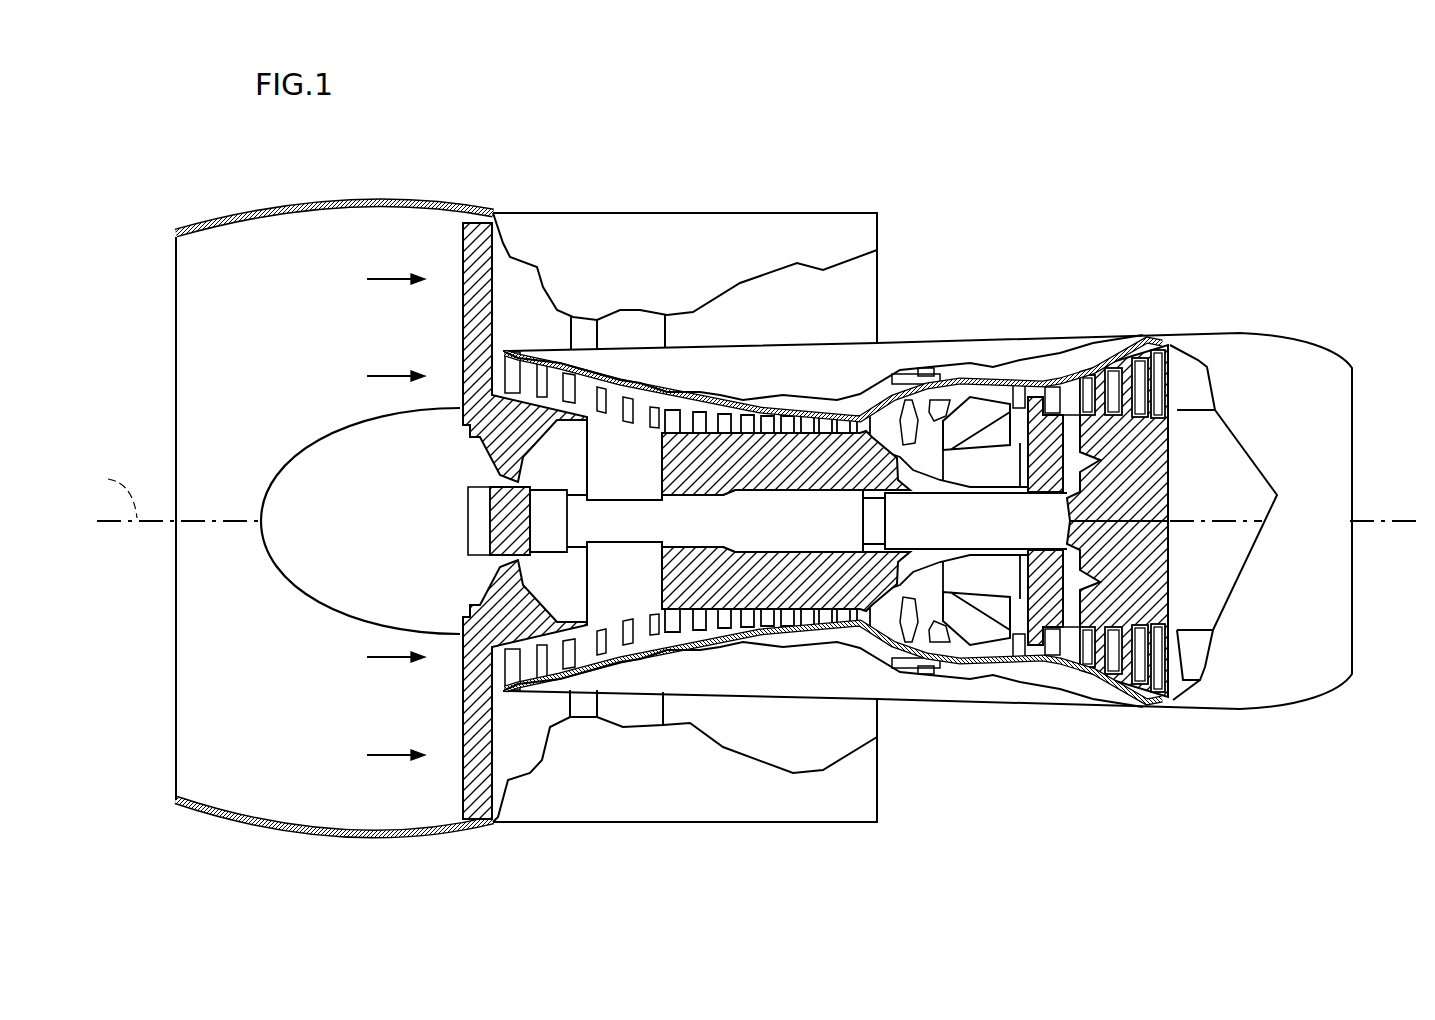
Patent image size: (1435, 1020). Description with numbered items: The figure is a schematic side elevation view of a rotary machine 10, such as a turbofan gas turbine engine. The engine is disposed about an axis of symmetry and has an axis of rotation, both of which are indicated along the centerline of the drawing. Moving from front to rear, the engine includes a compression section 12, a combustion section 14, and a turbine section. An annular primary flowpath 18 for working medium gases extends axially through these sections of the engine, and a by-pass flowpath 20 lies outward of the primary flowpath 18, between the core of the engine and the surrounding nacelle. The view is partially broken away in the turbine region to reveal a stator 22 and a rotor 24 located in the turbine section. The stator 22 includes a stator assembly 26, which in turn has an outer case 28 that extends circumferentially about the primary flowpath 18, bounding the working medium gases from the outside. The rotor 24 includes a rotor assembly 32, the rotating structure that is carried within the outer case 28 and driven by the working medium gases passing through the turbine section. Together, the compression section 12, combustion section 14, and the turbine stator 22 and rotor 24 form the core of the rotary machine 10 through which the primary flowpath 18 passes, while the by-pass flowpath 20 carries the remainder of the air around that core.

The rotary machine 10 is at (1050, 240).
The compression section 12 is at (658, 273).
The combustion section 14 is at (985, 397).
The primary flowpath 18 is at (374, 518).
The by-pass flowpath 20 is at (374, 519).
The stator 22 is at (1110, 345).
The rotor 24 is at (1016, 544).
The stator assembly 26 is at (1042, 383).
The outer case 28 is at (1008, 378).
The rotor assembly 32 is at (1066, 431).